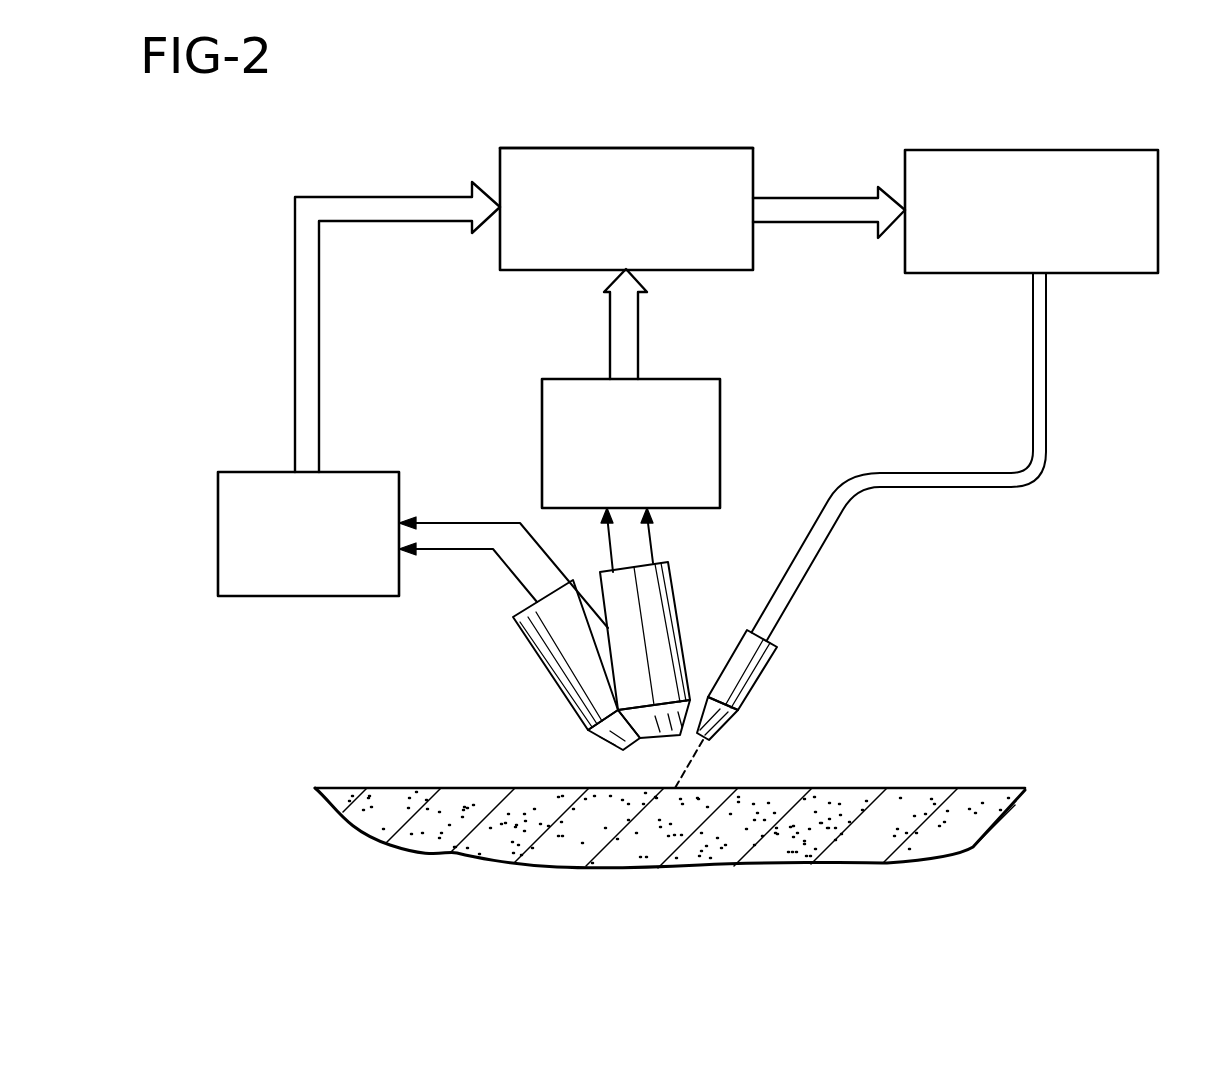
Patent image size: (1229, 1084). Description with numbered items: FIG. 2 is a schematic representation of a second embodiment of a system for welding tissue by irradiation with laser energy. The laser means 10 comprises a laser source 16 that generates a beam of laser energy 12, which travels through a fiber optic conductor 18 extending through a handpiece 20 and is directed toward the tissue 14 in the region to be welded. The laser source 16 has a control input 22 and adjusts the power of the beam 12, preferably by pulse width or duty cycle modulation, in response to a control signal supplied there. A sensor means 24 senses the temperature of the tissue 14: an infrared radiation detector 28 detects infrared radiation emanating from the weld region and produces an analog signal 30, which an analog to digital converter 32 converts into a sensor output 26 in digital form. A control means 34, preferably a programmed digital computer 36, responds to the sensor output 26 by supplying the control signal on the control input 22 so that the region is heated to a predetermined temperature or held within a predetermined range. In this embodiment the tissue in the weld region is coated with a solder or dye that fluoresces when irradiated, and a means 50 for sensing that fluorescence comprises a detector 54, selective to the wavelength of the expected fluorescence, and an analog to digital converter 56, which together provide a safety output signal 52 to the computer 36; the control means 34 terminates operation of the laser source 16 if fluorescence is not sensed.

The laser means 10 is at (1067, 352).
The beam of laser energy 12 is at (690, 762).
The tissue 14 is at (890, 790).
The laser source 16 is at (1158, 183).
The fiber optic conductor 18 is at (1046, 417).
The handpiece 20 is at (768, 673).
The control input 22 is at (850, 222).
The sensor means 24 is at (450, 615).
The sensor output 26 is at (319, 350).
The infrared radiation detector 28 is at (548, 665).
The analog signal 30 is at (452, 548).
The analog to digital converter 32 is at (218, 520).
The control means 34 is at (614, 130).
The programmed digital computer 36 is at (692, 147).
The means for sensing fluorescence 50 is at (722, 545).
The safety output signal 52 is at (638, 325).
The detector 54 is at (672, 616).
The analog to digital converter 56 is at (720, 410).